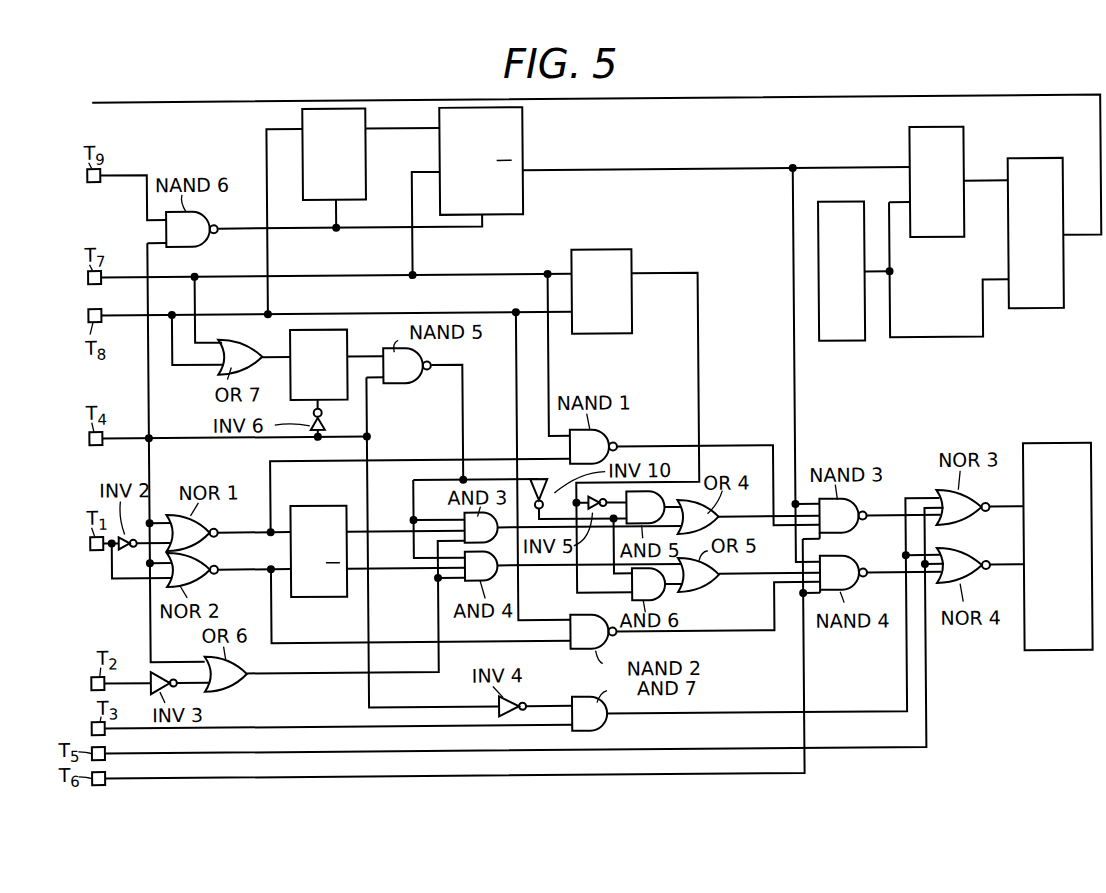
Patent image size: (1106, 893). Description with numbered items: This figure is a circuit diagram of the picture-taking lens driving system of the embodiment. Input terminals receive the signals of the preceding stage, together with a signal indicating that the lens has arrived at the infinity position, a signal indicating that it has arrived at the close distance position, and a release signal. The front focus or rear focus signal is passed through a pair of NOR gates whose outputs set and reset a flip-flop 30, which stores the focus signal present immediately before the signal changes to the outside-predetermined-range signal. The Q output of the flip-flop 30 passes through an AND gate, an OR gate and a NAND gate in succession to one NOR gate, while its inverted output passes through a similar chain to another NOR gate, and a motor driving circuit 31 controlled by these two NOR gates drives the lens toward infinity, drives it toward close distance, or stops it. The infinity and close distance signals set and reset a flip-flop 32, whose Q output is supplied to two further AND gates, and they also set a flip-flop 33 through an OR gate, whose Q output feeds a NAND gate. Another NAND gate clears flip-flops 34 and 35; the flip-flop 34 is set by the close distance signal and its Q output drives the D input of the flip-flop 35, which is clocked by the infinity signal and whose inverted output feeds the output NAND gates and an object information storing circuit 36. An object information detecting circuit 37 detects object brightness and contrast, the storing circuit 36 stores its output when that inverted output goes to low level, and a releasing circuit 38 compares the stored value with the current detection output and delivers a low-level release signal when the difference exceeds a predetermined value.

The flip-flop 30 is at (311, 503).
The motor driving circuit 31 is at (1052, 448).
The flip-flop 32 is at (600, 250).
The flip-flop 33 is at (347, 342).
The flip-flop 34 is at (370, 147).
The flip-flop 35 is at (527, 128).
The object information storing circuit 36 is at (942, 117).
The object information detecting circuit 37 is at (838, 204).
The releasing circuit 38 is at (1033, 162).